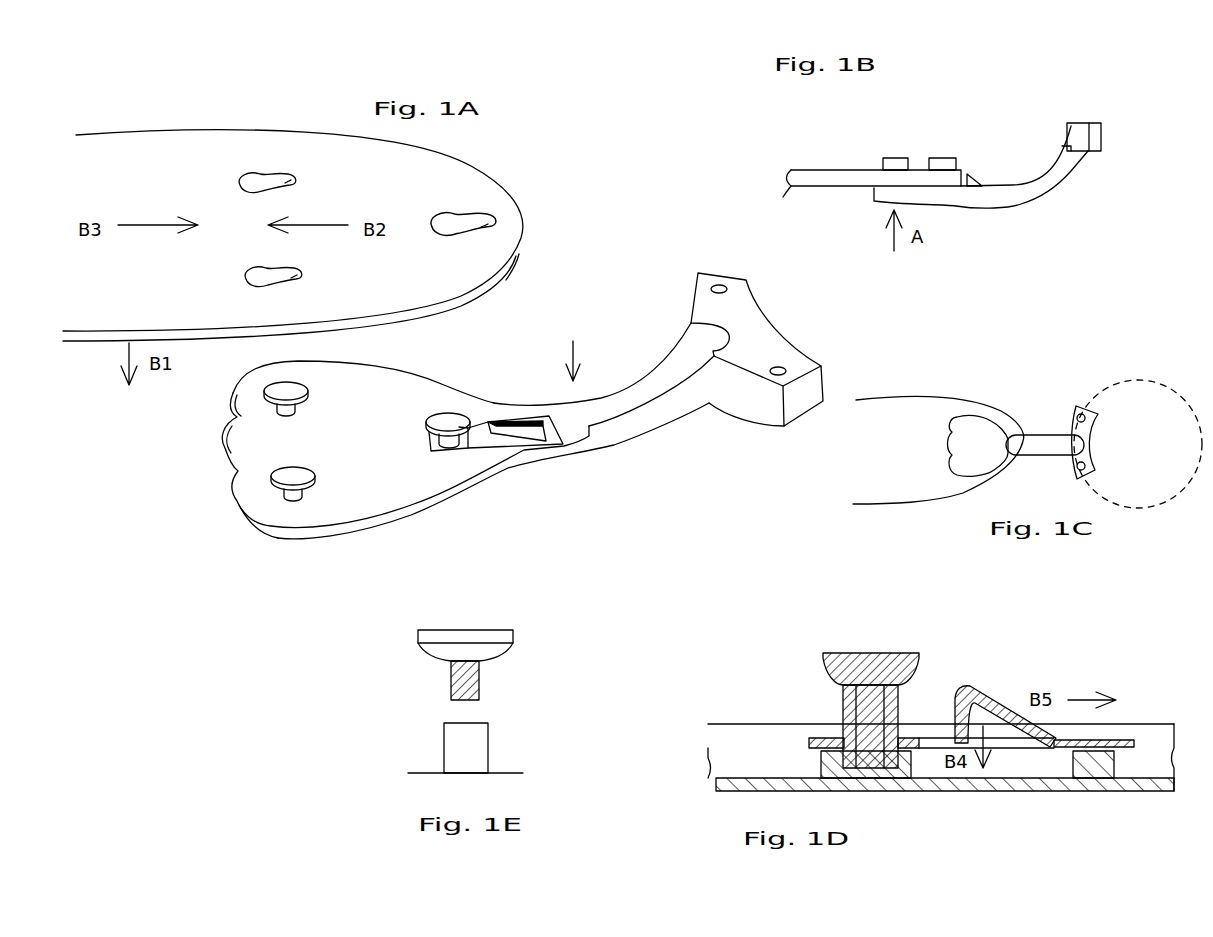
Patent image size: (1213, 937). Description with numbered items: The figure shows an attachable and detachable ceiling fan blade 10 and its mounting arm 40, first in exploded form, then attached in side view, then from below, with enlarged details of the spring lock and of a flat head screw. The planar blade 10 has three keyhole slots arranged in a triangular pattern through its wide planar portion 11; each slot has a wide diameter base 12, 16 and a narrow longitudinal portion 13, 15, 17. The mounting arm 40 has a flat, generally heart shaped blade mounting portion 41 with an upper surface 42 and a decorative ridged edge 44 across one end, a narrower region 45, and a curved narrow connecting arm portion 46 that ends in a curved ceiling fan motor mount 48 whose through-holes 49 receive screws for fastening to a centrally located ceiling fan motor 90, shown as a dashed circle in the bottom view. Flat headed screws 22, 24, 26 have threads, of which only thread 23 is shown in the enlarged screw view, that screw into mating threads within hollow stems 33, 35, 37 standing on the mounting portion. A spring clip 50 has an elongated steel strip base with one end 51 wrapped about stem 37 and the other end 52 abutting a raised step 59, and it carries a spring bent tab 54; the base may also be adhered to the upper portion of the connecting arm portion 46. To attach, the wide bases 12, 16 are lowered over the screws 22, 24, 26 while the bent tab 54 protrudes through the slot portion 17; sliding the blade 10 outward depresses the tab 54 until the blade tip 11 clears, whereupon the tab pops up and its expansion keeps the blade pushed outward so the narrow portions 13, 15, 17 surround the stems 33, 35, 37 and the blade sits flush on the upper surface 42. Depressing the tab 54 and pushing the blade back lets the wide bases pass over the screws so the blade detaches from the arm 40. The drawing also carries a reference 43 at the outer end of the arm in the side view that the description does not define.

In FIG. 1A, the ceiling fan blade 10 is at (172, 147).
In FIG. 1B, the ceiling fan blade 10 is at (832, 180).
In FIG. 1C, the ceiling fan blade 10 is at (890, 427).
In FIG. 1A, the wide planar portion 11 is at (510, 280).
In FIG. 1A, the wide diameter base 12 is at (267, 172).
In FIG. 1A, the narrow longitudinal portion 13 is at (285, 187).
In FIG. 1A, the narrow longitudinal portion 15 is at (292, 282).
In FIG. 1A, the wide diameter base 16 is at (442, 215).
In FIG. 1A, the narrow longitudinal portion 17 is at (485, 230).
In FIG. 1A, the flat head screw fastener 22 is at (287, 393).
In FIG. 1E, the flat head screw fastener 22 is at (458, 638).
In FIG. 1E, the thread 23 is at (457, 687).
In FIG. 1A, the flat headed fastener 24 is at (293, 478).
In FIG. 1A, the flat headed fastener 26 is at (447, 422).
In FIG. 1D, the flat headed fastener 26 is at (868, 662).
In FIG. 1A, the hollow stem 33 is at (290, 413).
In FIG. 1E, the hollow stem 33 is at (450, 755).
In FIG. 1A, the hollow stem 35 is at (296, 498).
In FIG. 1A, the hollow stem 37 is at (443, 444).
In FIG. 1D, the hollow stem 37 is at (847, 717).
In FIG. 1A, the mounting arm 40 is at (572, 350).
In FIG. 1A, the blade mounting portion 41 is at (305, 537).
In FIG. 1C, the blade mounting portion 41 is at (973, 442).
In FIG. 1A, the upper surface 42 is at (255, 505).
In FIG. 1B, the head 43 is at (1077, 137).
In FIG. 1A, the decorative ridged edge 44 is at (224, 465).
In FIG. 1A, the narrower region 45 is at (493, 403).
In FIG. 1A, the curved narrow connecting arm portion 46 is at (623, 437).
In FIG. 1B, the curved narrow connecting arm portion 46 is at (1038, 190).
In FIG. 1C, the curved narrow connecting arm portion 46 is at (1025, 448).
In FIG. 1D, the curved narrow connecting arm portion 46 is at (1055, 785).
In FIG. 1A, the curved ceiling fan motor mount 48 is at (745, 337).
In FIG. 1C, the curved ceiling fan motor mount 48 is at (1087, 445).
In FIG. 1A, the through-holes 49 is at (717, 287).
In FIG. 1C, the through-holes 49 is at (1093, 418).
In FIG. 1A, the spring clip 50 is at (530, 446).
In FIG. 1B, the spring clip 50 is at (972, 175).
In FIG. 1D, the spring clip 50 is at (1122, 742).
In FIG. 1D, the one end of spring clip base 51 is at (810, 743).
In FIG. 1D, the other end of spring clip base 52 is at (1062, 748).
In FIG. 1A, the spring bent tab 54 is at (528, 452).
In FIG. 1D, the spring bent tab 54 is at (966, 690).
In FIG. 1D, the raised step 59 is at (1097, 767).
In FIG. 1C, the ceiling fan motor 90 is at (1118, 397).